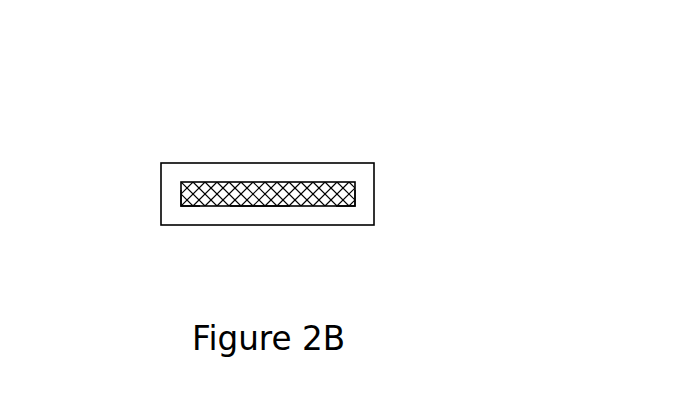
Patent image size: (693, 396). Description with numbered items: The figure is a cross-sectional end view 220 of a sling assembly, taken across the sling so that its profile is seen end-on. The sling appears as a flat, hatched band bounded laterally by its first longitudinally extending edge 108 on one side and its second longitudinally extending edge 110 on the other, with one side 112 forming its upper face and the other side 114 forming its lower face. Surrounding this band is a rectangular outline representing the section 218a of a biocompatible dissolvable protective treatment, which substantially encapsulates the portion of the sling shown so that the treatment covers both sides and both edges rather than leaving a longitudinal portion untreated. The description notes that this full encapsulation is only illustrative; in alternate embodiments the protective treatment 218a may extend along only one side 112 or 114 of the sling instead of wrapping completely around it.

The section of protective treatment 218a is at (163, 173).
The first side of sling 112 is at (288, 182).
The first longitudinally extending edge 108 is at (181, 205).
The second longitudinally extending edge 110 is at (355, 205).
The second side of sling 114 is at (258, 205).
The cross-sectional end view 220 is at (493, 98).